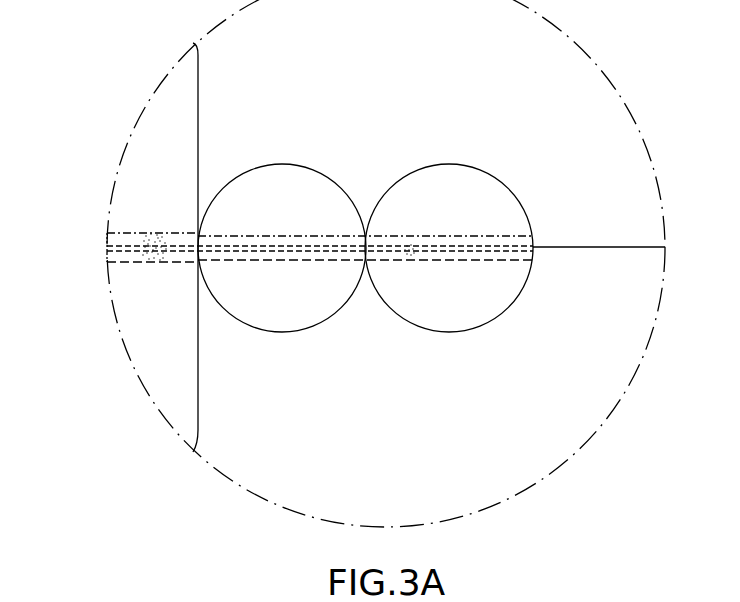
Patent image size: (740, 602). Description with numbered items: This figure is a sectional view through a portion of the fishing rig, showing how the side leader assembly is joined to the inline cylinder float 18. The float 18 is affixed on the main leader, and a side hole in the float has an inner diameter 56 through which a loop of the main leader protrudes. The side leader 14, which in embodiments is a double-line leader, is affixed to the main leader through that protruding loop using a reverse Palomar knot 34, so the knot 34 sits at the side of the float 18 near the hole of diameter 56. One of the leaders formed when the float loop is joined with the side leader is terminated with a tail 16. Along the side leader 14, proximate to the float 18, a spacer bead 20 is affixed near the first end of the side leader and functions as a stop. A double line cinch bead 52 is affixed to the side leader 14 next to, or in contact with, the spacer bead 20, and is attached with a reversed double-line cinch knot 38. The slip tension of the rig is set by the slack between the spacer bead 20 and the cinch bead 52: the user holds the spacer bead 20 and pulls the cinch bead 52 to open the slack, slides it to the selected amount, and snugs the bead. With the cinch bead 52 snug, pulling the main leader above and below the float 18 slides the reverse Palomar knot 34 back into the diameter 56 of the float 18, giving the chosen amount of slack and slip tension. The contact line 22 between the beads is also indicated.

The side leader 14 is at (382, 242).
The tail 16 is at (535, 243).
The inline cylinder float 18 is at (152, 137).
The bead 20 is at (275, 177).
The contact line 22 is at (291, 240).
The reverse Palomar knot 34 is at (118, 305).
The double-line cinch knot 38 is at (410, 268).
The double line cinch bead 52 is at (490, 170).
The inner diameter 56 is at (115, 228).